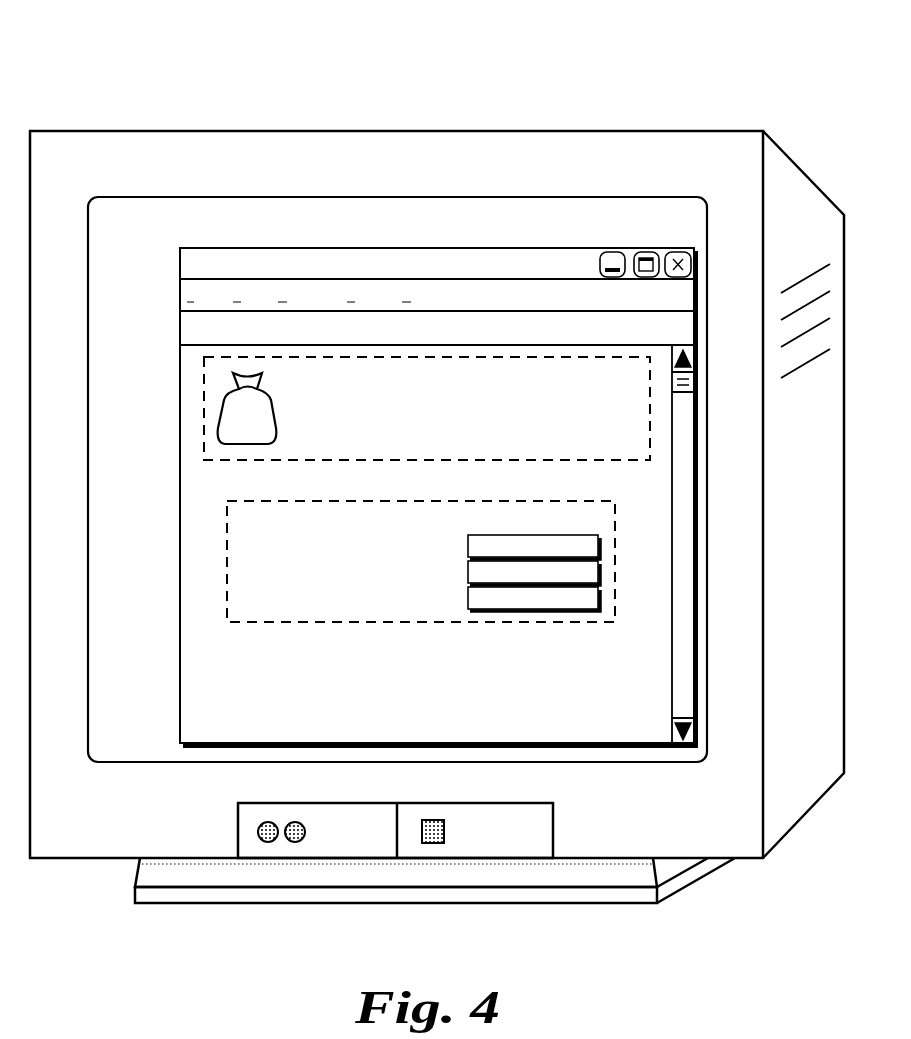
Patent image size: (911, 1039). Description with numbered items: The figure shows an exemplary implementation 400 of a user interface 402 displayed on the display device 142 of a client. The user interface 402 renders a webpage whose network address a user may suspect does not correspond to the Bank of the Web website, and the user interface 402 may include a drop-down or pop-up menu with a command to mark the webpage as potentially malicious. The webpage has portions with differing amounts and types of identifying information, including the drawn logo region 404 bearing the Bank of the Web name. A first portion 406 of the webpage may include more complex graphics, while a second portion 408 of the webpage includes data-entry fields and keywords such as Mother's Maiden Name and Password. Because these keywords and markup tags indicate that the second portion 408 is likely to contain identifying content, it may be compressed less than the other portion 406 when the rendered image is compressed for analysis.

The exemplary implementation 400 is at (132, 82).
The display device 142 is at (440, 128).
The user interface 402 is at (200, 247).
The bank logo / site identification 404 is at (203, 406).
The first portion 406 is at (224, 695).
The second portion 408 is at (227, 560).